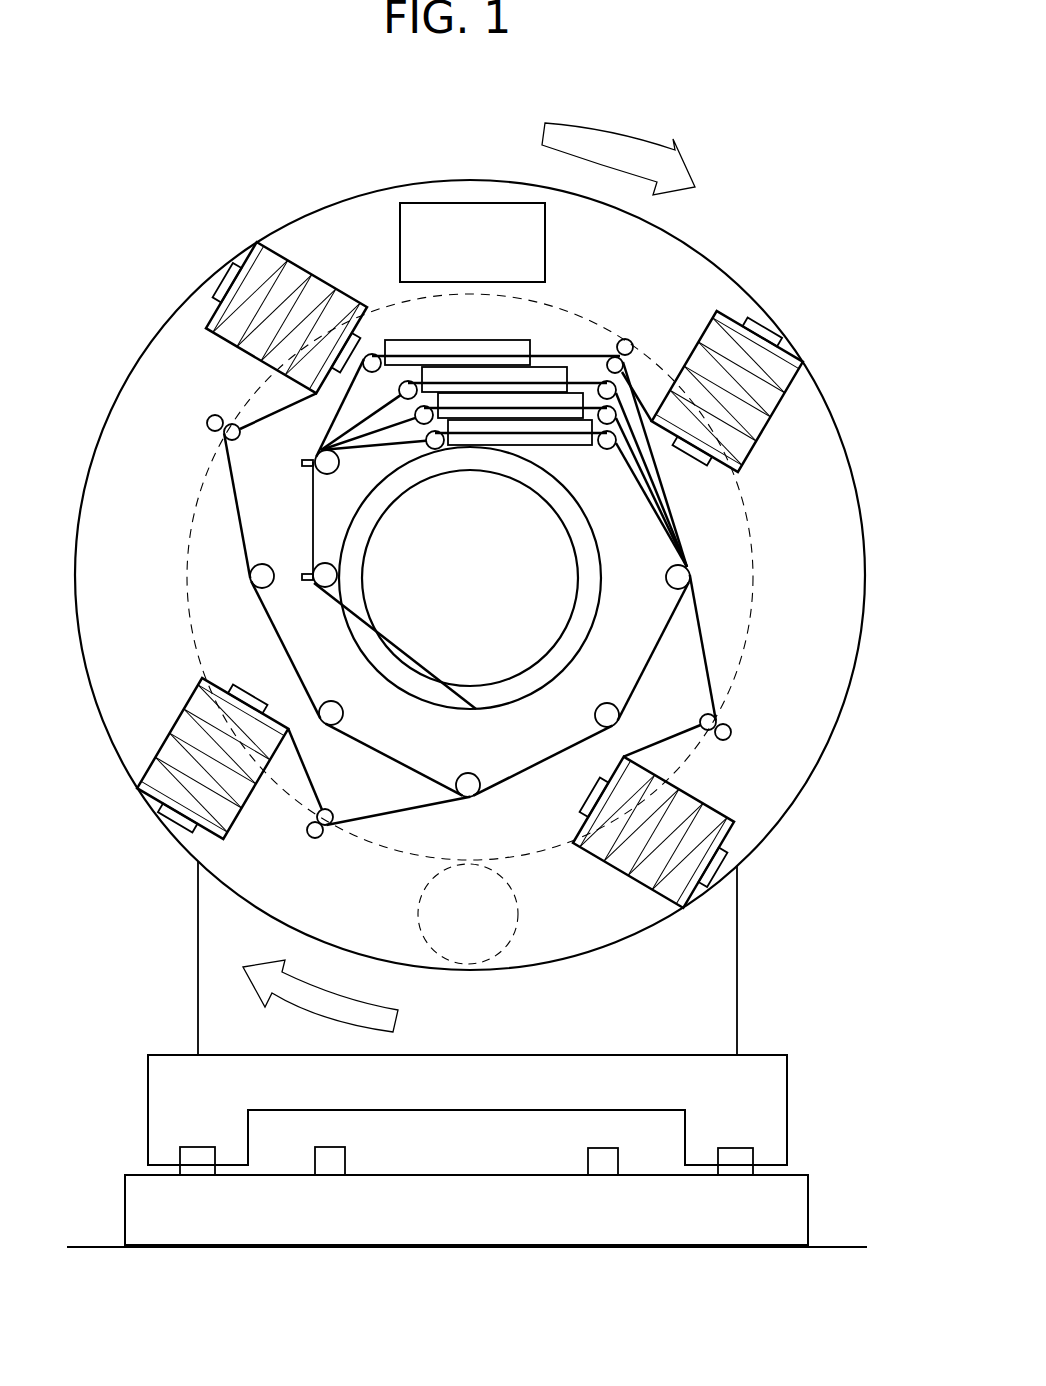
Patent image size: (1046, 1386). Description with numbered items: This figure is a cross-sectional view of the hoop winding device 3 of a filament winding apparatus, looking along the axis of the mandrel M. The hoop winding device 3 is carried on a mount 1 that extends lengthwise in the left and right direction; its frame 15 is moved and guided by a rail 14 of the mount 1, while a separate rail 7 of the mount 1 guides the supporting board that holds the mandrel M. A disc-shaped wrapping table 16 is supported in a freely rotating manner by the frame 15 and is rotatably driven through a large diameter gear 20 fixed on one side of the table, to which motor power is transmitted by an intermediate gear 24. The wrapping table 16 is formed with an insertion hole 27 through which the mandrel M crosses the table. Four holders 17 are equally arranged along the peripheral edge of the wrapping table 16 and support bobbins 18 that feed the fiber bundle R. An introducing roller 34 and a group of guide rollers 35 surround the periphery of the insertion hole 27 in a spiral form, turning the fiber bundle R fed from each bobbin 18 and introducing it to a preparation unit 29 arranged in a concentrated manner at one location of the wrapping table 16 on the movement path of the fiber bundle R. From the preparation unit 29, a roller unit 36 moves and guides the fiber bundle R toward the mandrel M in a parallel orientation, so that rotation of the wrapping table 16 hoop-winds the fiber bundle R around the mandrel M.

The mount 1 is at (125, 1195).
The hoop winding device 3 is at (727, 238).
The rail 7 is at (348, 1162).
The rail 14 is at (196, 1152).
The frame 15 is at (168, 1055).
The wrapping table 16 is at (386, 180).
The holders 17 is at (215, 285).
The bobbins 18 is at (293, 262).
The large diameter gear 20 is at (185, 587).
The intermediate gear 24 is at (520, 913).
The insertion hole 27 is at (597, 568).
The preparation unit 29 is at (476, 372).
The introducing roller 34 is at (217, 427).
The guide rollers 35 is at (262, 590).
The roller unit 36 is at (322, 562).
The mandrel M is at (512, 662).
The fiber bundle R is at (233, 508).